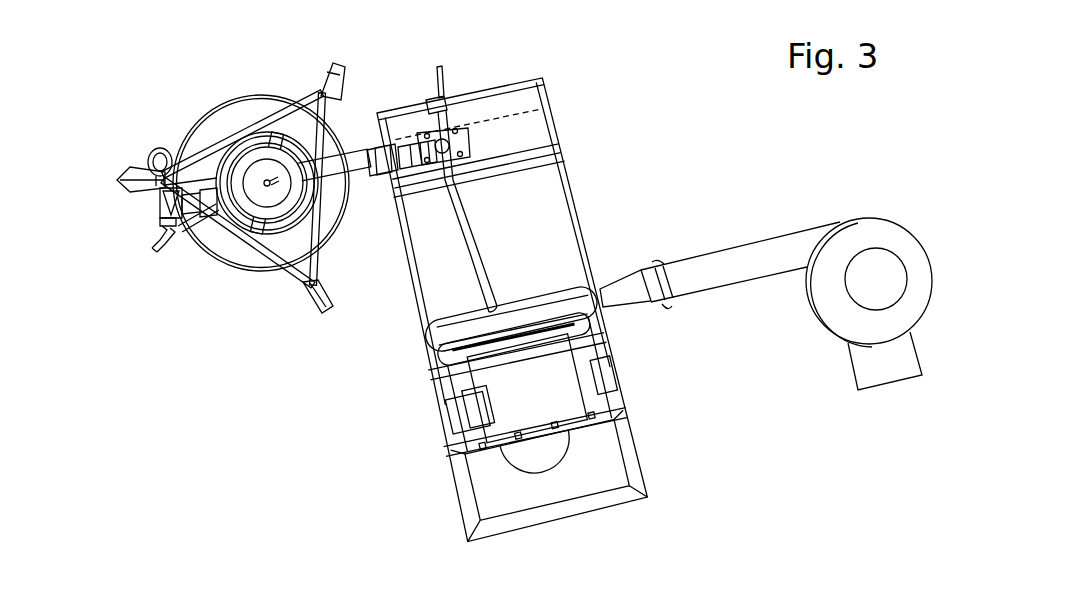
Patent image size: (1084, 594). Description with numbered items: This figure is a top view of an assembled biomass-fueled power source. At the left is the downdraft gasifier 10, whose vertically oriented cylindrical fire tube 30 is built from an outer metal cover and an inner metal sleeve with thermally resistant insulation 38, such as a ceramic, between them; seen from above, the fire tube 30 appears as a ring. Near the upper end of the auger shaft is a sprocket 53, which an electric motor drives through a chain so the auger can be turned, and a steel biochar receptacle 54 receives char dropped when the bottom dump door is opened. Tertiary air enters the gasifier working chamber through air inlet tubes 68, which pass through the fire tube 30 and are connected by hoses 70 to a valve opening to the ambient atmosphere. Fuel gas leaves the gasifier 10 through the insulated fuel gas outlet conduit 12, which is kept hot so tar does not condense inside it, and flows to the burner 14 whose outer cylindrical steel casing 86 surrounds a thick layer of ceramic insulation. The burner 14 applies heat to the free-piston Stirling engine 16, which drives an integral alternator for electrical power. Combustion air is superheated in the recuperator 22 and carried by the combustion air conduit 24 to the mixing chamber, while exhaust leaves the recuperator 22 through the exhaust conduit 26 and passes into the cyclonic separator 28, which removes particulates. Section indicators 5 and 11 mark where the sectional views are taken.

The section line 5 is at (140, 208).
The downdraft gasifier 10 is at (245, 225).
The section line 11 is at (445, 10).
The fuel gas outlet conduit 12 is at (358, 148).
The burner 14 is at (630, 158).
The free-piston Stirling engine 16 is at (567, 438).
The recuperator 22 is at (583, 297).
The combustion air conduit 24 is at (470, 252).
The exhaust conduit 26 is at (737, 268).
The cyclonic separator 28 is at (893, 273).
The fire tube 30 is at (282, 140).
The thermally resistant insulation 38 is at (255, 589).
The sprocket 53 is at (272, 200).
The biochar receptacle 54 is at (253, 97).
The air inlet tubes 68 is at (192, 173).
The hoses 70 is at (155, 150).
The outer cylindrical steel casing 86 is at (543, 210).